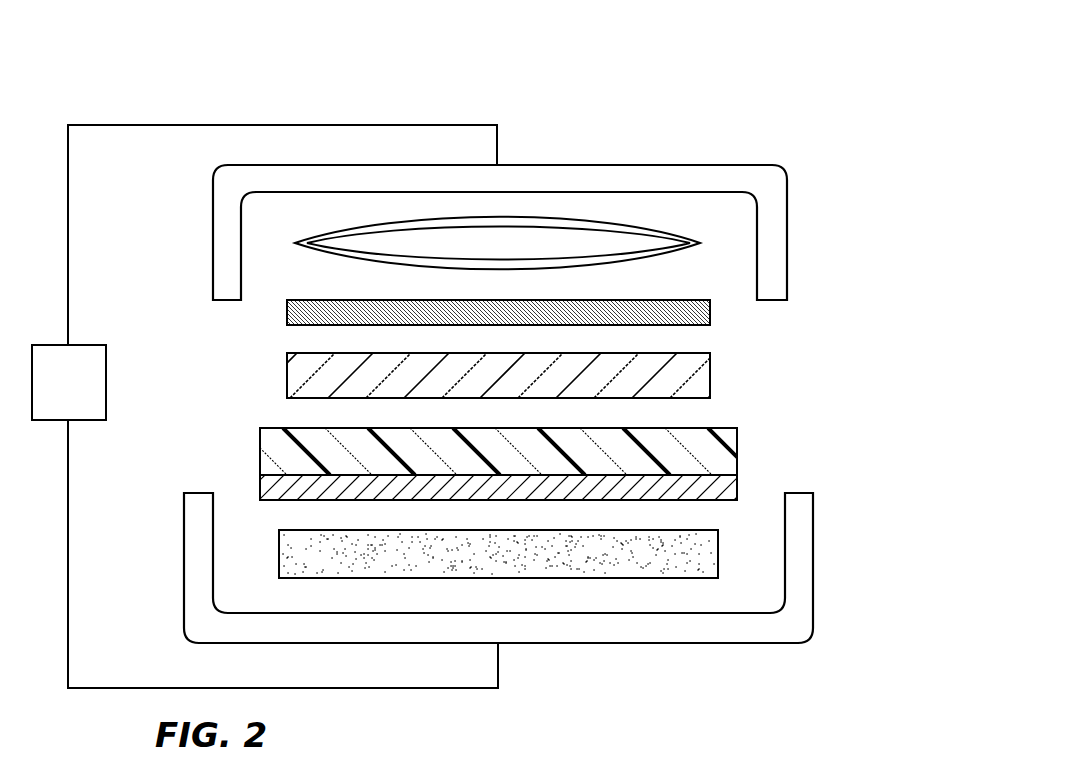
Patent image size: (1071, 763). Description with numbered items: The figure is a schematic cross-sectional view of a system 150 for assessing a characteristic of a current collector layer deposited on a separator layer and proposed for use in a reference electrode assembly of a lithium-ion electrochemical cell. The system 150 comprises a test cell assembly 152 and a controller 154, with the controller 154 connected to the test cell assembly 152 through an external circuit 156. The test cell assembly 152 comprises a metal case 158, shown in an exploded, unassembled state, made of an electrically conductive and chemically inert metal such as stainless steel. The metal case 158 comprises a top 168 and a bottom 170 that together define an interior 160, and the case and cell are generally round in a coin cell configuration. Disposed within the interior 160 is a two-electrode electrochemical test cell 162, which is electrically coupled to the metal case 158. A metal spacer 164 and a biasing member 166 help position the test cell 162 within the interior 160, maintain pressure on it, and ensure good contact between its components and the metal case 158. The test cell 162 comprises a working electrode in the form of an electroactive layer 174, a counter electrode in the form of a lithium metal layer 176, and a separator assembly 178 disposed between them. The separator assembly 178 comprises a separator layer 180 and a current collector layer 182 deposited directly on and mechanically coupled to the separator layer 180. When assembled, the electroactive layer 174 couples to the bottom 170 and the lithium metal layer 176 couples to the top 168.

The system 150 is at (756, 118).
The test cell assembly 152 is at (627, 165).
The controller 154 is at (69, 382).
The external circuit 156 is at (270, 125).
The metal case 158 is at (213, 254).
The interior 160 is at (748, 403).
The two-electrode electrochemical test cell 162 is at (242, 414).
The metal spacer 164 is at (712, 312).
The biasing member 166 is at (700, 243).
The top 168 is at (787, 190).
The bottom 170 is at (813, 578).
The electroactive layer 174 is at (590, 578).
The lithium metal layer 176 is at (287, 378).
The separator assembly 178 is at (496, 502).
The separator layer 180 is at (259, 458).
The current collector layer 182 is at (275, 500).